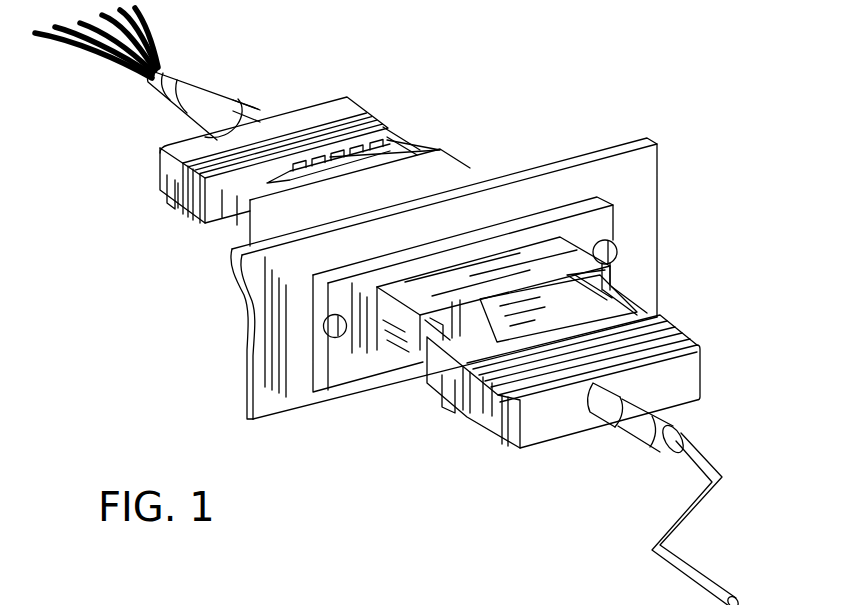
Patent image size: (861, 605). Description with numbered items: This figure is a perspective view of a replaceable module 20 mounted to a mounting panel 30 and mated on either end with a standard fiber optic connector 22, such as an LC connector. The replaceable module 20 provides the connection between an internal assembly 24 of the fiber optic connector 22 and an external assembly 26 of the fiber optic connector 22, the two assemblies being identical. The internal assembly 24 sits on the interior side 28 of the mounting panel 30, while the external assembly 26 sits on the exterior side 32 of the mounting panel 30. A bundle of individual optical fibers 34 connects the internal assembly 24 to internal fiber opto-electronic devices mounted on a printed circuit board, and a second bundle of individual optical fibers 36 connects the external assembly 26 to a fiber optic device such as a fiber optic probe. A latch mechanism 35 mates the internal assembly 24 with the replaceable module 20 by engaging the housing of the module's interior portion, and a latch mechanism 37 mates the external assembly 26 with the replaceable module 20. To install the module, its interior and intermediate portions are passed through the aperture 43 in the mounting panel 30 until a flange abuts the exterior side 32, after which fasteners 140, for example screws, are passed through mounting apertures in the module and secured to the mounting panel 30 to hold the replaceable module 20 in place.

The replaceable module 20 is at (214, 370).
The fiber optic connector 22 is at (360, 107).
The internal assembly 24 is at (385, 123).
The external assembly 26 is at (670, 327).
The interior side 28 is at (632, 136).
The mounting panel 30 is at (264, 284).
The exterior side 32 is at (638, 195).
The bundle of individual optical fibers 34 is at (173, 107).
The latch mechanism 35 is at (425, 155).
The bundle of individual optical fibers 36 is at (690, 400).
The latch mechanism 37 is at (565, 308).
The aperture 43 is at (485, 604).
The fasteners 140 is at (328, 327).